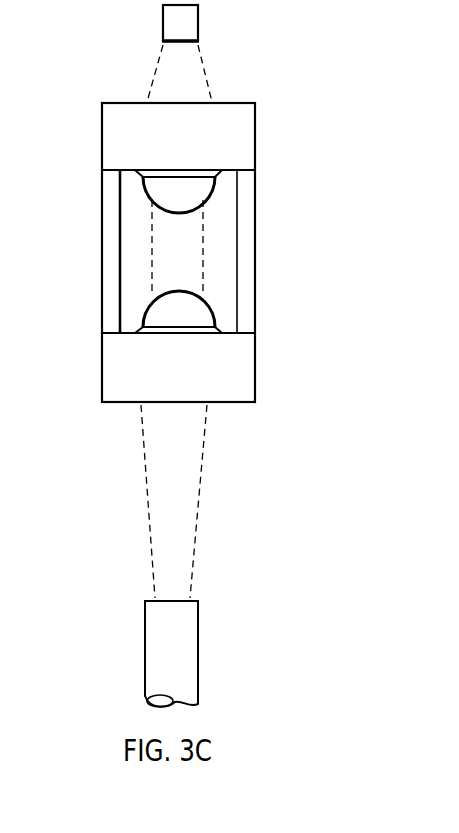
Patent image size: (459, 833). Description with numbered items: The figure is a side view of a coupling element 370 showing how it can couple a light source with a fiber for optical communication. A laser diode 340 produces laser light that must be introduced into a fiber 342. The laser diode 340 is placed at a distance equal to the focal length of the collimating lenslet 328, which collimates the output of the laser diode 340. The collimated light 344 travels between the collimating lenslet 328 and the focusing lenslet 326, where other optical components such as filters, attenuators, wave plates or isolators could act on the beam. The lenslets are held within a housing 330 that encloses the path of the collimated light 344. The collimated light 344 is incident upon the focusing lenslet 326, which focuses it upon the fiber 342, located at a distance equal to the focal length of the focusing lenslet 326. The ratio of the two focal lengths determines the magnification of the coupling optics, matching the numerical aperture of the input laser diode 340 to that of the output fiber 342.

The laser diode 340 is at (198, 22).
The collimating lenslet 328 is at (188, 188).
The collimated light 344 is at (203, 226).
The lens housing 330 is at (103, 270).
The focusing lenslet 326 is at (187, 315).
The optical assembly 370 is at (175, 289).
The fiber 342 is at (198, 655).